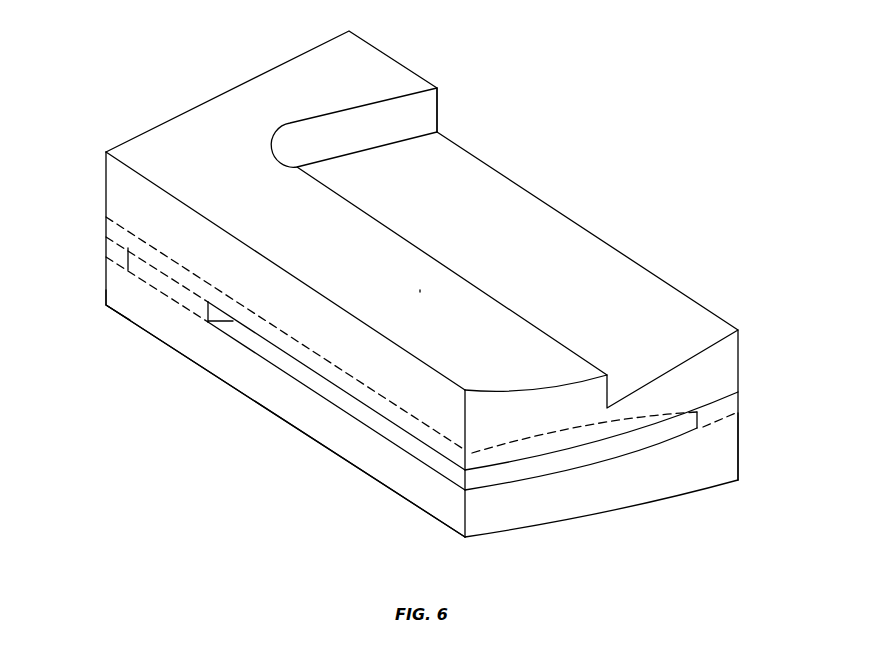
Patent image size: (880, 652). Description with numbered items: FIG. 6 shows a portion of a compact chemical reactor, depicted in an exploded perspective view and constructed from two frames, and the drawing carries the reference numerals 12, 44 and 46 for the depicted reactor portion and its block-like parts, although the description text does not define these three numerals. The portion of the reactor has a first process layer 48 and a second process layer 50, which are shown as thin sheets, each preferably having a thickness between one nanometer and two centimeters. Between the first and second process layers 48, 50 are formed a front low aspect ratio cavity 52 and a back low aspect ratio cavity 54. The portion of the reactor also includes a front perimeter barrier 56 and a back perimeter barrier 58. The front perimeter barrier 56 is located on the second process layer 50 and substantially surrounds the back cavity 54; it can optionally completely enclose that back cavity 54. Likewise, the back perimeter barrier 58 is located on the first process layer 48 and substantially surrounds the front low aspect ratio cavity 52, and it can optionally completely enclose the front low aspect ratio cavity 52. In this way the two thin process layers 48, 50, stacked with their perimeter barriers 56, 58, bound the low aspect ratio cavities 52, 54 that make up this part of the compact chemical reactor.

The fixture assembly 12 is at (664, 136).
The base 44 is at (128, 323).
The upper block 46 is at (740, 358).
The first process layer 48 is at (367, 455).
The second process layer 50 is at (627, 408).
The front low aspect ratio cavity 52 is at (208, 322).
The back low aspect ratio cavity 54 is at (417, 117).
The front perimeter barrier 56 is at (419, 291).
The back perimeter barrier 58 is at (127, 257).